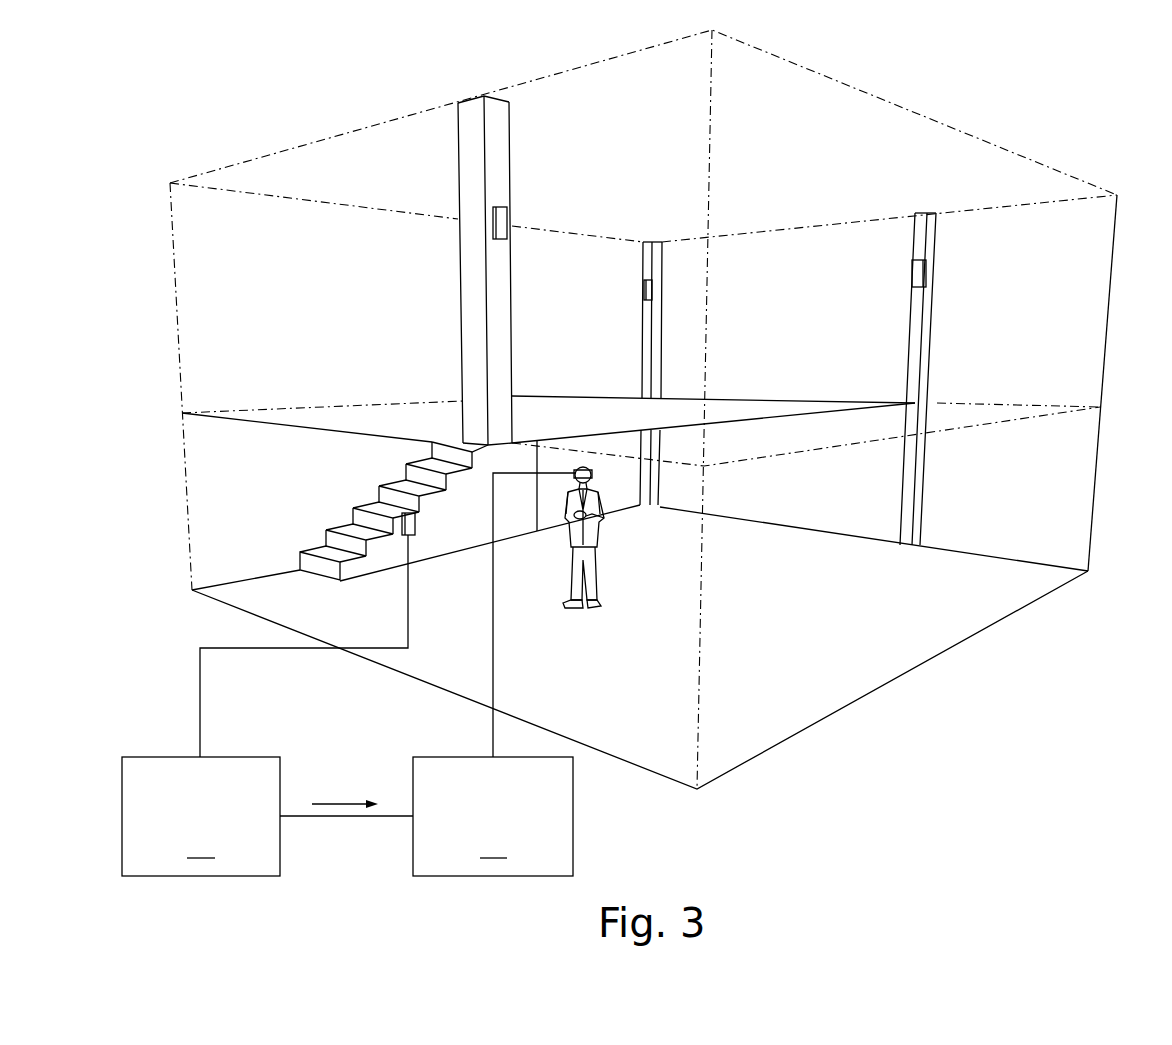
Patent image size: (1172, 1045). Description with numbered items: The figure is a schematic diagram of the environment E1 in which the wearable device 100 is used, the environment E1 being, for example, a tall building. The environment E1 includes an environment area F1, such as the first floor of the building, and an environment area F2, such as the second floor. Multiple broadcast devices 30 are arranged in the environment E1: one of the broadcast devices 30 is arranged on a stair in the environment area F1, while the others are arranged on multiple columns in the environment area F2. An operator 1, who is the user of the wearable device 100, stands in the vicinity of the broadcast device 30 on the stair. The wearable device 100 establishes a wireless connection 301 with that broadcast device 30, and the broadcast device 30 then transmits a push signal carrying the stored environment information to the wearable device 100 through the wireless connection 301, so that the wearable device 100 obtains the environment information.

The environment E1 is at (272, 101).
The environment area F1 is at (229, 459).
The environment area F2 is at (210, 225).
The broadcast device 30 is at (912, 273).
The wearable device 100 is at (502, 673).
The wireless connection 301 is at (341, 818).
The operator 1 is at (596, 538).